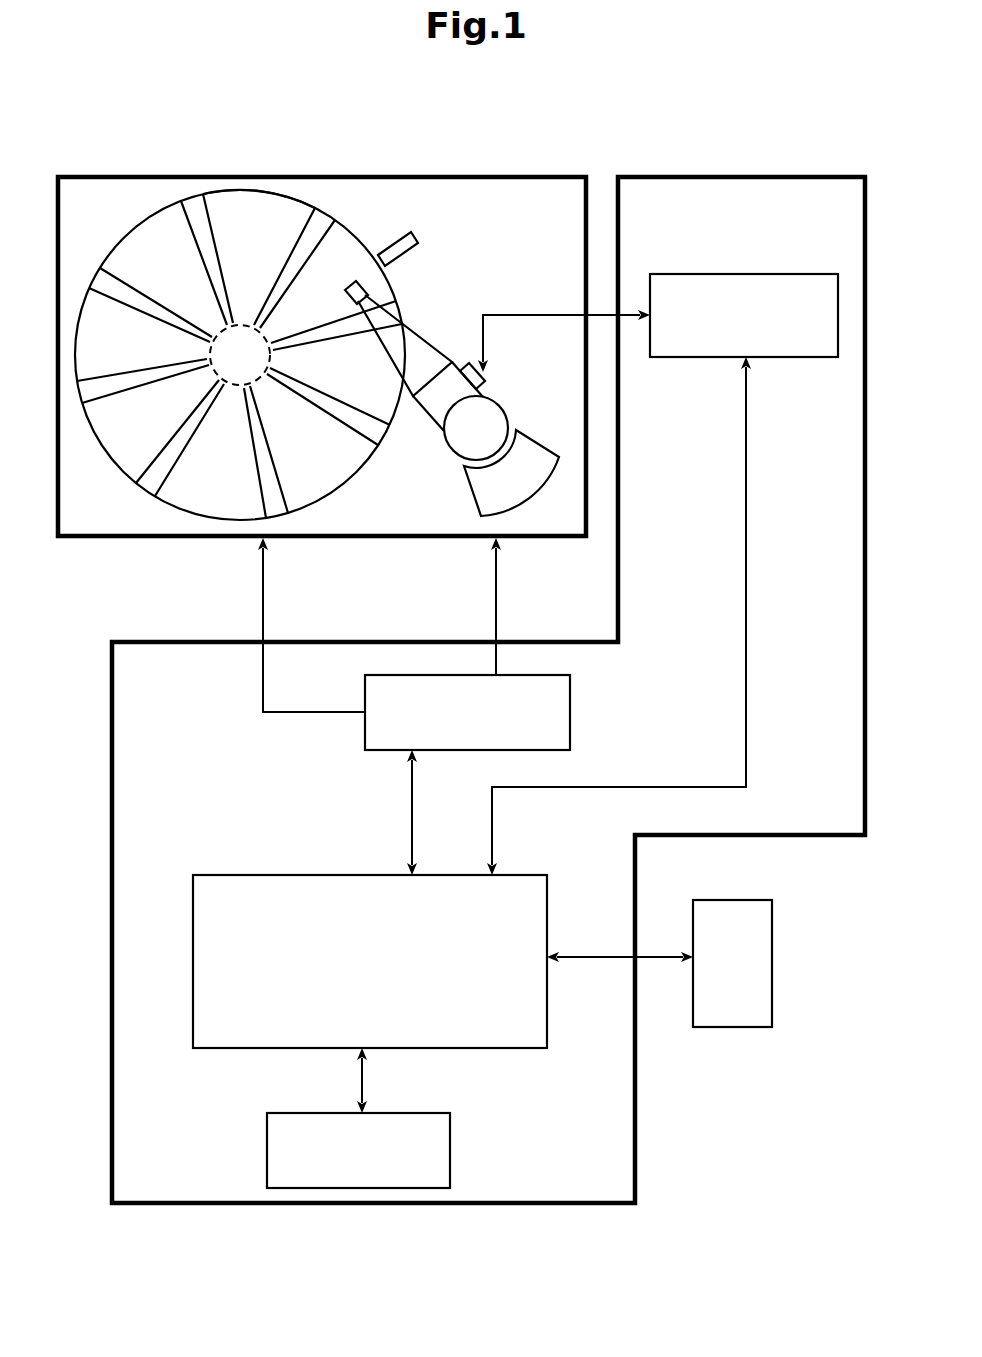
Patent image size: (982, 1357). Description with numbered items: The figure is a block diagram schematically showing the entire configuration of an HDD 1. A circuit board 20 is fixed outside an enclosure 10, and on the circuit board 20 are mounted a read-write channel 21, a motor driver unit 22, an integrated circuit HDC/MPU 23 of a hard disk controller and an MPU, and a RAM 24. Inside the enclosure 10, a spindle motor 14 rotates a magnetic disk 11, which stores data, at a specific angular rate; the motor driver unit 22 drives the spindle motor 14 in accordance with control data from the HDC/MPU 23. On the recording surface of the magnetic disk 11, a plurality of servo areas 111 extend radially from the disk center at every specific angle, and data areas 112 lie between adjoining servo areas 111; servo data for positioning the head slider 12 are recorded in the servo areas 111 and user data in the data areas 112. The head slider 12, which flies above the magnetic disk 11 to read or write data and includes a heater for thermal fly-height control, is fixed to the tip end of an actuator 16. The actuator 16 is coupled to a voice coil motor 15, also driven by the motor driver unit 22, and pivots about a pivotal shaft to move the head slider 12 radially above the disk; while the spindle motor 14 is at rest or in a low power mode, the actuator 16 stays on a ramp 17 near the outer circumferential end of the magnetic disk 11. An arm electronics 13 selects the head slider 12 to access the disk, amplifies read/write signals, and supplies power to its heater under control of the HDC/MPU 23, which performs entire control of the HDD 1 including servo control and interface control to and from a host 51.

The HDD 1 is at (626, 139).
The enclosure 10 is at (392, 537).
The magnetic disk 11 is at (303, 200).
The servo areas 111 is at (200, 200).
The data areas 112 is at (257, 200).
The head slider 12 is at (367, 291).
The arm electronics 13 is at (490, 379).
The spindle motor 14 is at (232, 392).
The voice coil motor 15 is at (540, 441).
The actuator 16 is at (411, 440).
The ramp 17 is at (415, 243).
The circuit board 20 is at (112, 768).
The read-write channel 21 is at (742, 274).
The motor driver unit 22 is at (570, 723).
The HDC/MPU 23 is at (235, 876).
The RAM 24 is at (418, 1113).
The host 51 is at (774, 922).